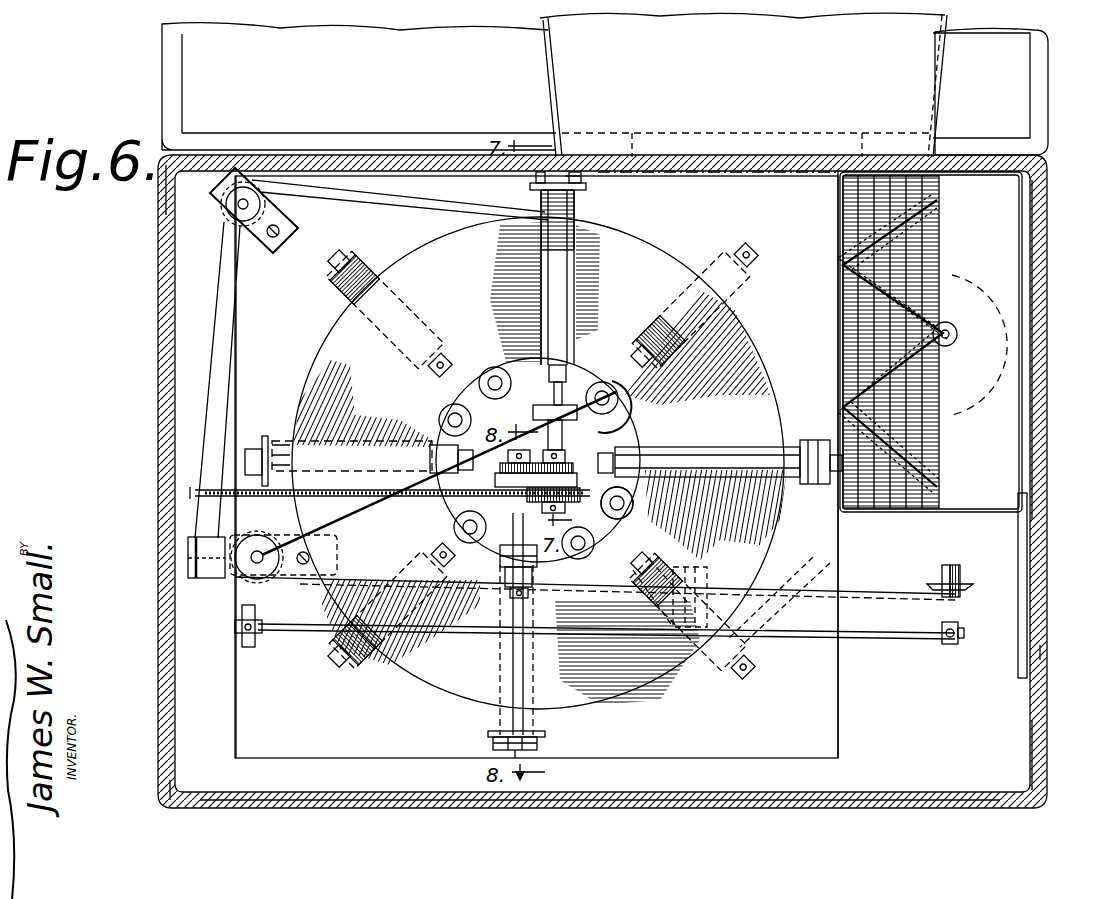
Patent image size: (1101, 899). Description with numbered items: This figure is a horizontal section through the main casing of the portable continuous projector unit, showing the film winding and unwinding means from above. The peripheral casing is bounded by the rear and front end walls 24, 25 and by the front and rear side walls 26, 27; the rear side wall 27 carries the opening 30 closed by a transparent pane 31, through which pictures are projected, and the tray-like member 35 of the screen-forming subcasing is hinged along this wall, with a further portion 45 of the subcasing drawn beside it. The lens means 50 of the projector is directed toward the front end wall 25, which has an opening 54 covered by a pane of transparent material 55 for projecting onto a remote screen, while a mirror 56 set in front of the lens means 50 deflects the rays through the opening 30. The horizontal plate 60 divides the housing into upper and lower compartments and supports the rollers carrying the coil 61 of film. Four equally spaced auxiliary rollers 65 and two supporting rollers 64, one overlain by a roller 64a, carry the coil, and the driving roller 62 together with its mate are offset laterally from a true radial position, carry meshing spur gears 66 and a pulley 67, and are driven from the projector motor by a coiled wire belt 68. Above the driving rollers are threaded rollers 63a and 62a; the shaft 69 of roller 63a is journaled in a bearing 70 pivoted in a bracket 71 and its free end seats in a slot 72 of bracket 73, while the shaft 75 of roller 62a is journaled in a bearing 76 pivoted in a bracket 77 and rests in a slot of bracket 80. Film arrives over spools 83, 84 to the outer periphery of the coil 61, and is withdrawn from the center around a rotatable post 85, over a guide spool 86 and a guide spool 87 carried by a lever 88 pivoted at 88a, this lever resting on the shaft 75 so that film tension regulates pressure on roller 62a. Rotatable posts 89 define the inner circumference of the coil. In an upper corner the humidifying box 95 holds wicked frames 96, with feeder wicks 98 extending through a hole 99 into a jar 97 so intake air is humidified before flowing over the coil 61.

The rear end wall 24 is at (158, 380).
The front end wall 25 is at (1040, 432).
The front side wall 26 is at (886, 798).
The rear side wall 27 is at (428, 162).
The opening 30 is at (862, 136).
The pane 31 is at (690, 172).
The tray-like member 35 is at (162, 48).
The lid portion 45 is at (938, 100).
The lens means 50 is at (700, 578).
The opening 54 is at (1050, 645).
The pane of transparent material 55 is at (1020, 662).
The mirror 56 is at (595, 592).
The plate 60 is at (806, 746).
The coil 61 is at (760, 384).
The driving roller 62 is at (500, 722).
The threaded roller 62a is at (506, 584).
The roller 63a is at (578, 348).
The supporting roller 64 is at (270, 440).
The roller 64a is at (812, 486).
The auxiliary roller 65 is at (342, 284).
The spur gear 66 is at (500, 472).
The pulley 67 is at (620, 522).
The coiled wire belt 68 is at (414, 498).
The shaft 69 is at (565, 158).
The bearing 70 is at (578, 372).
The bracket 71 is at (588, 430).
The slot 72 is at (532, 190).
The bracket 73 is at (582, 186).
The shaft 75 is at (545, 722).
The bearing 76 is at (520, 752).
The bracket 77 is at (540, 745).
The bracket 80 is at (500, 556).
The spool 83 is at (204, 580).
The spool 84 is at (266, 210).
The rotatable post 85 is at (614, 426).
The guide spool 86 is at (262, 580).
The guide spool 87 is at (960, 574).
The lever 88 is at (894, 638).
The pivot 88a is at (254, 648).
The rotatable post 89 is at (472, 420).
The box 95 is at (982, 512).
The frame 96 is at (930, 432).
The jar 97 is at (962, 280).
The feeder wick 98 is at (932, 474).
The hole 99 is at (950, 332).